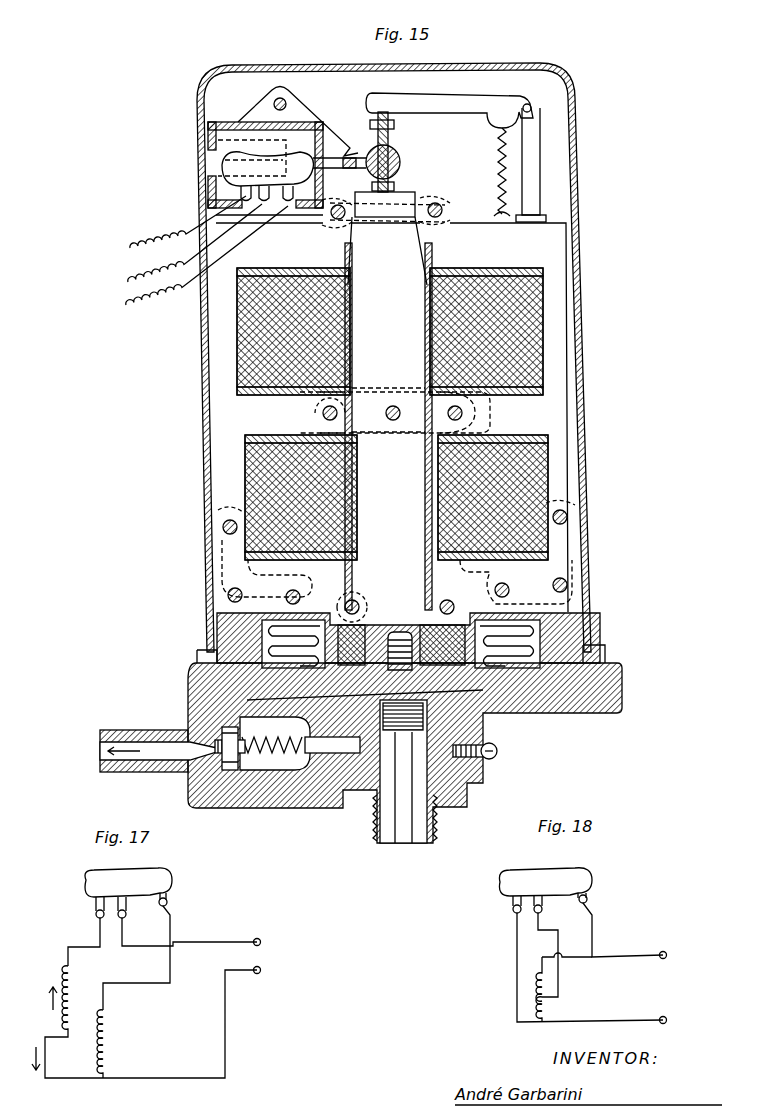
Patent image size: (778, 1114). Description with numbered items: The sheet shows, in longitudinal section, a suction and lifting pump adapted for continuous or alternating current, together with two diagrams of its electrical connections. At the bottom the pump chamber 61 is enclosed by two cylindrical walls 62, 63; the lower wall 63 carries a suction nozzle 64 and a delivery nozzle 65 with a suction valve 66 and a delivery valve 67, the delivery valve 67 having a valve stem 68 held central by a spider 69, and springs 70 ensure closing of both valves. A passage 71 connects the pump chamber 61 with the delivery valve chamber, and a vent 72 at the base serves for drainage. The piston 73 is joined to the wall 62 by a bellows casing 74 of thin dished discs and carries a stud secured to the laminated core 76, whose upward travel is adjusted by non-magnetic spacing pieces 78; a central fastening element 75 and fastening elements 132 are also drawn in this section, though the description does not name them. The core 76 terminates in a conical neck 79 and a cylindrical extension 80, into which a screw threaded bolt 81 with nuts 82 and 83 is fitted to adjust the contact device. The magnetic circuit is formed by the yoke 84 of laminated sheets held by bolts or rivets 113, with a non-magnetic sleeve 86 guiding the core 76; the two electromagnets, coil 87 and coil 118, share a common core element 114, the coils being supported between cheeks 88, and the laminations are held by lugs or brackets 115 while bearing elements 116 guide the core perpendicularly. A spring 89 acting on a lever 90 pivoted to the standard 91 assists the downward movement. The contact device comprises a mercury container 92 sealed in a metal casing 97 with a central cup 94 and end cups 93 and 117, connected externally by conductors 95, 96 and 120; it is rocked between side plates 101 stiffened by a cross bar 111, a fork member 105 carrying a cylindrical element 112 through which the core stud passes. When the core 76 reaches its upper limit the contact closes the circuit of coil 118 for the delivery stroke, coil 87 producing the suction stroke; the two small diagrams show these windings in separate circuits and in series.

In FIG. 15, the pump chamber 61 is at (365, 690).
In FIG. 15, the cylindrical wall 62 is at (217, 620).
In FIG. 15, the cylindrical wall 63 is at (200, 680).
In FIG. 15, the suction nozzle 64 is at (412, 828).
In FIG. 15, the delivery nozzle 65 is at (135, 762).
In FIG. 15, the suction valve 66 is at (403, 771).
In FIG. 15, the delivery valve 67 is at (300, 770).
In FIG. 15, the valve stem 68 is at (225, 755).
In FIG. 15, the spider 69 is at (230, 772).
In FIG. 15, the springs 70 is at (272, 755).
In FIG. 15, the passage 71 is at (332, 729).
In FIG. 15, the vent 72 is at (494, 756).
In FIG. 15, the piston 73 is at (445, 645).
In FIG. 15, the bellows casing 74 is at (268, 645).
In FIG. 15, the screw 75 is at (400, 632).
In FIG. 15, the core 76 is at (388, 455).
In FIG. 15, the spacing pieces 78 is at (351, 645).
In FIG. 15, the conical neck 79 is at (387, 251).
In FIG. 15, the cylindrical extension 80 is at (387, 207).
In FIG. 15, the screw threaded bolt 81 is at (388, 140).
In FIG. 15, the nut 82 is at (394, 124).
In FIG. 15, the nut 83 is at (394, 186).
In FIG. 15, the yoke 84 is at (565, 305).
In FIG. 15, the sleeve 86 is at (352, 348).
In FIG. 15, the coil 87 is at (390, 331).
In FIG. 17, the coil 87 is at (62, 1014).
In FIG. 18, the coil 87 is at (548, 985).
In FIG. 15, the cheeks 88 is at (520, 264).
In FIG. 15, the spring 89 is at (493, 172).
In FIG. 15, the lever 90 is at (460, 95).
In FIG. 15, the standard 91 is at (536, 168).
In FIG. 15, the container 92 is at (295, 165).
In FIG. 17, the container 92 is at (100, 880).
In FIG. 18, the container 92 is at (566, 876).
In FIG. 15, the cup 93 is at (244, 194).
In FIG. 17, the cup 93 is at (83, 911).
In FIG. 18, the cup 93 is at (512, 911).
In FIG. 15, the cup 94 is at (262, 200).
In FIG. 17, the cup 94 is at (128, 915).
In FIG. 18, the cup 94 is at (543, 911).
In FIG. 15, the conductor 95 is at (128, 249).
In FIG. 17, the conductor 95 is at (98, 937).
In FIG. 18, the conductor 95 is at (517, 990).
In FIG. 15, the conductor 96 is at (127, 282).
In FIG. 17, the conductor 96 is at (132, 947).
In FIG. 18, the conductor 96 is at (543, 955).
In FIG. 15, the metal casing 97 is at (222, 128).
In FIG. 15, the side plates 101 is at (300, 112).
In FIG. 15, the fork member 105 is at (340, 158).
In FIG. 15, the cross bar 111 is at (280, 97).
In FIG. 15, the cylindrical element 112 is at (400, 163).
In FIG. 15, the bolts or rivets 113 is at (437, 217).
In FIG. 15, the common core element 114 is at (414, 412).
In FIG. 15, the lugs or brackets 115 is at (575, 568).
In FIG. 15, the bearing elements 116 is at (443, 208).
In FIG. 15, the end cup 117 is at (290, 202).
In FIG. 17, the end cup 117 is at (168, 900).
In FIG. 18, the end cup 117 is at (589, 898).
In FIG. 15, the coil 118 is at (396, 497).
In FIG. 17, the coil 118 is at (124, 1044).
In FIG. 18, the coil 118 is at (548, 1012).
In FIG. 15, the conductor 120 is at (125, 305).
In FIG. 17, the conductor 120 is at (170, 972).
In FIG. 18, the conductor 120 is at (593, 938).
In FIG. 15, the screws 132 is at (570, 517).